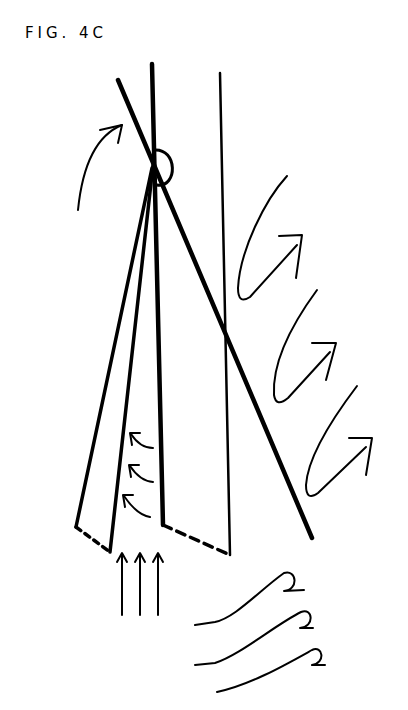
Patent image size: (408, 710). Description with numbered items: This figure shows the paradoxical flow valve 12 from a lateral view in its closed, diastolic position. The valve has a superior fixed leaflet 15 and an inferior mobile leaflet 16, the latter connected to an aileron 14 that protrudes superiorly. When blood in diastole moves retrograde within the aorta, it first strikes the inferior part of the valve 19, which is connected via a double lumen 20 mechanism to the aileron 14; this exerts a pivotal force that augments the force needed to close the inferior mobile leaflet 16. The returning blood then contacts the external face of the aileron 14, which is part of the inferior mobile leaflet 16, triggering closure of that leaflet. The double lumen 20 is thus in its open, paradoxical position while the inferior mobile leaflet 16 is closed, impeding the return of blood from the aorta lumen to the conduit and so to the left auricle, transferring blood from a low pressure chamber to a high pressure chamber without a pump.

The paradoxical flow valve 12 is at (224, 163).
The aileron 14 is at (118, 89).
The superior fixed leaflet 15 is at (155, 103).
The inferior mobile leaflet 16 is at (242, 357).
The inferior part of the valve 19 is at (82, 498).
The double lumen 20 is at (142, 405).